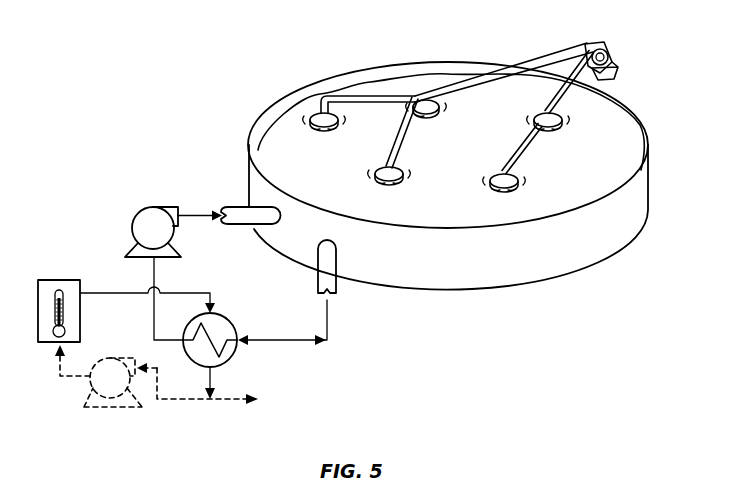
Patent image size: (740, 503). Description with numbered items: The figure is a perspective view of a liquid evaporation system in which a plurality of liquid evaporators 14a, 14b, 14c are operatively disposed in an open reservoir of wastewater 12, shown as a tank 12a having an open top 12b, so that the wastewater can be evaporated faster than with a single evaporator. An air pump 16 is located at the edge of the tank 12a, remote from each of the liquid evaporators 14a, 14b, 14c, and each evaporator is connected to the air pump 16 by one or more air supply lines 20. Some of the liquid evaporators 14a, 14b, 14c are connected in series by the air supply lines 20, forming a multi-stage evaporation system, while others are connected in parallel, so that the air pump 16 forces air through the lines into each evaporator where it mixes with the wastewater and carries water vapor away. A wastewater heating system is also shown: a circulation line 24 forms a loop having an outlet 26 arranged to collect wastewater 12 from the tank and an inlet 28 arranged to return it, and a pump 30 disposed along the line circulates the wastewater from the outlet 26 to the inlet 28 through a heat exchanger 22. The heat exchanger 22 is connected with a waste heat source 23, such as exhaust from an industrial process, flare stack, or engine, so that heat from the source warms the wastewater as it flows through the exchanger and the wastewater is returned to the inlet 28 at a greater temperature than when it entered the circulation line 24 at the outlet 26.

The wastewater 12 is at (591, 195).
The tank 12a is at (602, 238).
The open top 12b is at (610, 132).
The liquid evaporator 14a is at (399, 181).
The liquid evaporator 14b is at (430, 113).
The liquid evaporator 14c is at (323, 131).
The air pump 16 is at (597, 42).
The air supply lines 20 is at (497, 66).
The heat exchanger 22 is at (230, 357).
The waste heat source 23 is at (38, 307).
The circulation line 24 is at (309, 344).
The outlet 26 is at (316, 292).
The inlet 28 is at (232, 211).
The pump 30 is at (152, 212).